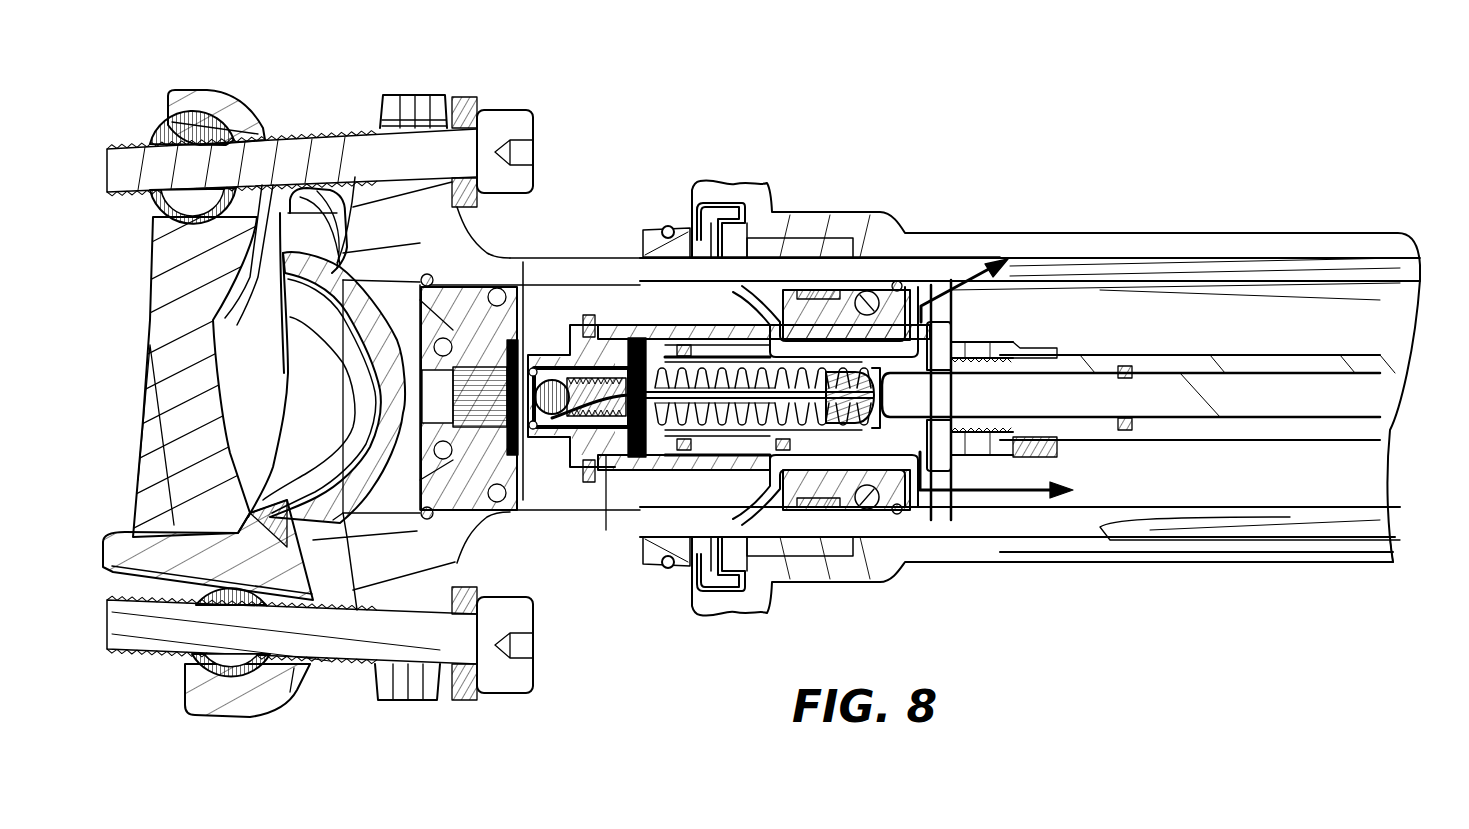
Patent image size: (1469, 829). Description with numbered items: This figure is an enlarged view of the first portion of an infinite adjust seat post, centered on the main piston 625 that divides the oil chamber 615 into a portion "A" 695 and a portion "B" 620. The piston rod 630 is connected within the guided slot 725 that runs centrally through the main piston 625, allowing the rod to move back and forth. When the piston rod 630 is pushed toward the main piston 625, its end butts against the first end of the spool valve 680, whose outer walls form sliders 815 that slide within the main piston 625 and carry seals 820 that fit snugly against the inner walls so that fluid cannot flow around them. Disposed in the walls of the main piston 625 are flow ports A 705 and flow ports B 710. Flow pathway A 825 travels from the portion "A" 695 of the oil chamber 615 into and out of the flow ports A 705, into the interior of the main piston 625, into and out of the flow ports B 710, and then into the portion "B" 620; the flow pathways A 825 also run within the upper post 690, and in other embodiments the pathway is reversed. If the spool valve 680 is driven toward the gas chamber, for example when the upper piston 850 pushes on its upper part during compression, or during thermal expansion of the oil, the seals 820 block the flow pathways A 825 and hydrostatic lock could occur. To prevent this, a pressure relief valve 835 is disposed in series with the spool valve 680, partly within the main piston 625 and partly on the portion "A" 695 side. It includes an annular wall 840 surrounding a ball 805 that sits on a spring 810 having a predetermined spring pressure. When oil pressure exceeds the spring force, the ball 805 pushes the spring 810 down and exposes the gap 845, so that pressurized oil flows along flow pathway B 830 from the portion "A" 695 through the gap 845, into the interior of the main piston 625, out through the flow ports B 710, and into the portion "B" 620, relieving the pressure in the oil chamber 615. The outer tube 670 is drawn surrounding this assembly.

The oil chamber 615 is at (700, 312).
The portion "B" of the oil chamber 620 is at (1290, 325).
The main piston 625 is at (880, 290).
The piston rod 630 is at (1385, 400).
The outer tube 670 is at (1280, 233).
The spool valve 680 is at (878, 628).
The upper post 690 is at (503, 253).
The portion "A" of the oil chamber 695 is at (700, 500).
The flow ports A 705 is at (745, 345).
The flow ports B 710 is at (913, 313).
The guided slot 725 is at (862, 410).
The ball 805 is at (538, 357).
The spring 810 is at (606, 362).
The sliders 815 is at (698, 215).
The seals 820 is at (795, 350).
The flow pathway A 825 is at (940, 318).
The flow pathway B 830 is at (1038, 495).
The pressure relief valve 835 is at (628, 575).
The annular wall 840 is at (578, 482).
The gap 845 is at (526, 500).
The upper piston 850 is at (418, 520).